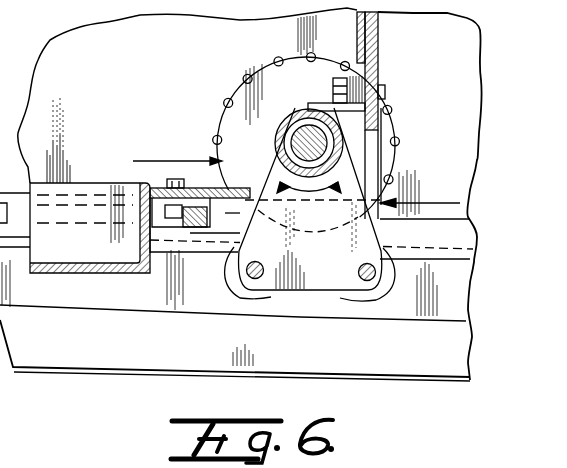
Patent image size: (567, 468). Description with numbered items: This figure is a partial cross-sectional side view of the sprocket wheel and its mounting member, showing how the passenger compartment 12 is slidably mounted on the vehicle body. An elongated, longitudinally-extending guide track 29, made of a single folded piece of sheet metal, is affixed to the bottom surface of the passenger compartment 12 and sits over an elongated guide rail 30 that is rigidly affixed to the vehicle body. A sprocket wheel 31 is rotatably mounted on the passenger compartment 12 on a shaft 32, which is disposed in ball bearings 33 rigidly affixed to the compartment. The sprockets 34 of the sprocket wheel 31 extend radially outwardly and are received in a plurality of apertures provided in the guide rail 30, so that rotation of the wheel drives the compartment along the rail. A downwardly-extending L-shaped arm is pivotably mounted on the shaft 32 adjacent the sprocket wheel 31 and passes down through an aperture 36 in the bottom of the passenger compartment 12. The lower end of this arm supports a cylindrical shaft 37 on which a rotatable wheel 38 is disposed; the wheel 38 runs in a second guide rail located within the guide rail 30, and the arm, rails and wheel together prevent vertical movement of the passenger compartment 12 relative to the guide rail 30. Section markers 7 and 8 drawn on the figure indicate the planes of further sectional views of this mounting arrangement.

The section line 7- 7 is at (159, 5).
The section line 8- 8 is at (40, 88).
The passenger compartment 12 is at (86, 277).
The guide tracks 29 is at (203, 222).
The guide rails 30 is at (449, 244).
The sprocket wheels 31 is at (268, 66).
The shaft 32 is at (305, 138).
The ball bearings 33 is at (314, 118).
The sprockets 34 is at (219, 137).
The apertures 36 is at (381, 150).
The cylindrical shafts 37 is at (362, 278).
The rotatable wheels 38 is at (387, 294).